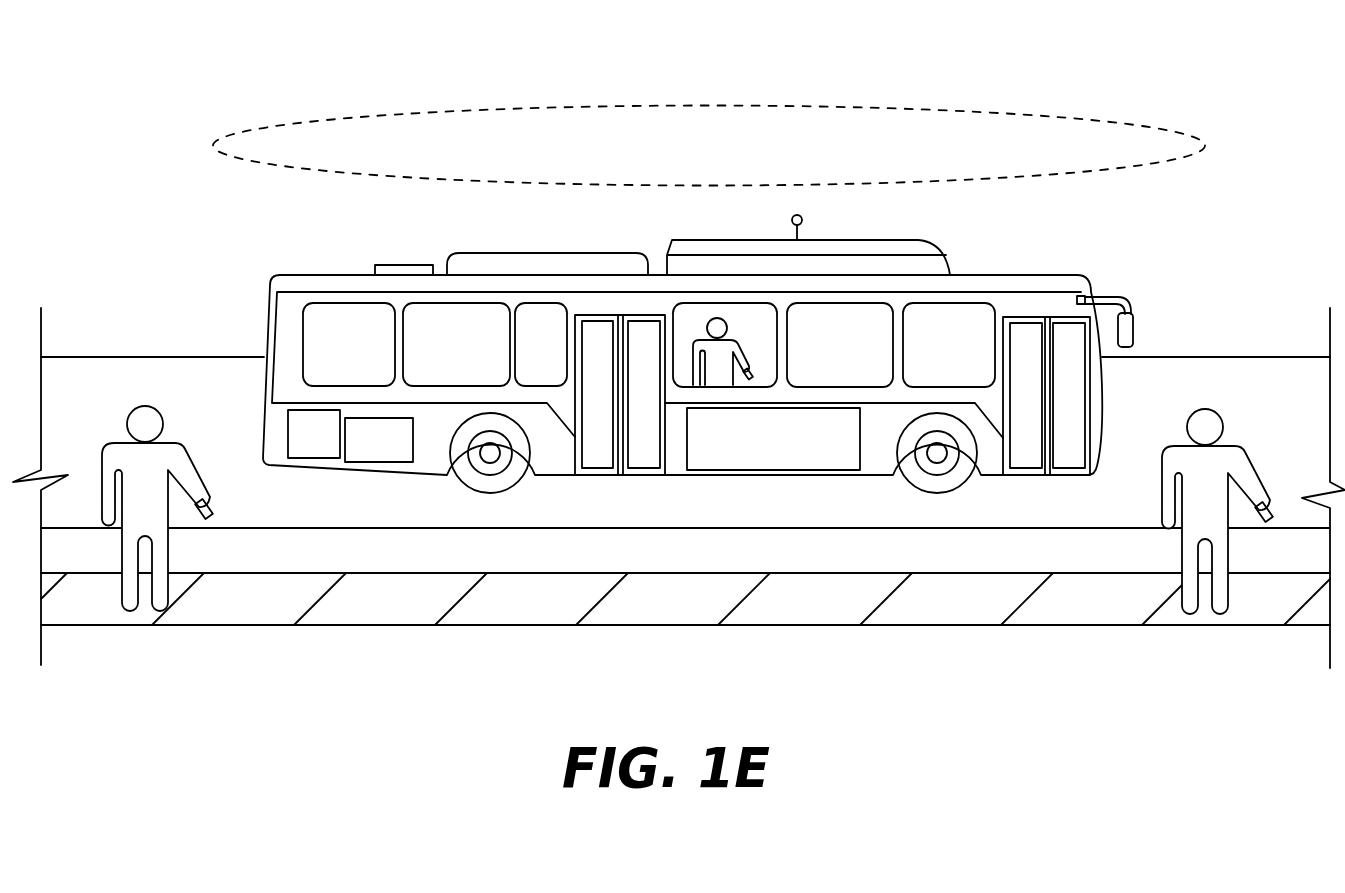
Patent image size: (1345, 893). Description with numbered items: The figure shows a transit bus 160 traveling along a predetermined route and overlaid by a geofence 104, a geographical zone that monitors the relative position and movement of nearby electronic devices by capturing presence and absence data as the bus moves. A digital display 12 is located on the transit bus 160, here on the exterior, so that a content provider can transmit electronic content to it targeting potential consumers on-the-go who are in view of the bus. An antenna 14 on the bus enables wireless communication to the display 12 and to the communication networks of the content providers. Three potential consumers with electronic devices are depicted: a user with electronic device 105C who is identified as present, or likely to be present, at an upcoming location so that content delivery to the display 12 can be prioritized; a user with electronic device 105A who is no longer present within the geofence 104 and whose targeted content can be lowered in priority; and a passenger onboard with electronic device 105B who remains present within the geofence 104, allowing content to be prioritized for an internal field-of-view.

The geofence 104 is at (360, 106).
The transit bus 160 is at (1088, 283).
The antenna 14 is at (803, 220).
The digital display 12 is at (687, 466).
The electronic device 105A is at (212, 495).
The electronic device 105B is at (755, 366).
The electronic device 105C is at (1270, 492).